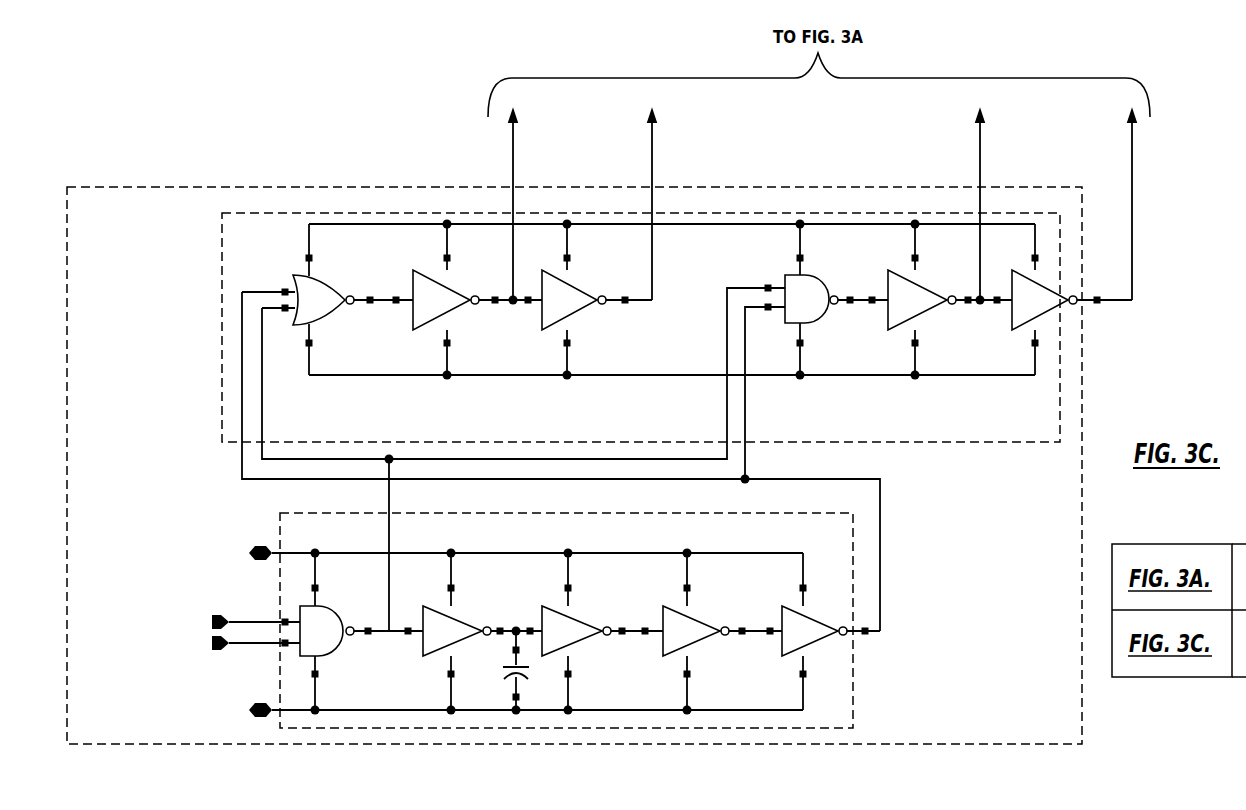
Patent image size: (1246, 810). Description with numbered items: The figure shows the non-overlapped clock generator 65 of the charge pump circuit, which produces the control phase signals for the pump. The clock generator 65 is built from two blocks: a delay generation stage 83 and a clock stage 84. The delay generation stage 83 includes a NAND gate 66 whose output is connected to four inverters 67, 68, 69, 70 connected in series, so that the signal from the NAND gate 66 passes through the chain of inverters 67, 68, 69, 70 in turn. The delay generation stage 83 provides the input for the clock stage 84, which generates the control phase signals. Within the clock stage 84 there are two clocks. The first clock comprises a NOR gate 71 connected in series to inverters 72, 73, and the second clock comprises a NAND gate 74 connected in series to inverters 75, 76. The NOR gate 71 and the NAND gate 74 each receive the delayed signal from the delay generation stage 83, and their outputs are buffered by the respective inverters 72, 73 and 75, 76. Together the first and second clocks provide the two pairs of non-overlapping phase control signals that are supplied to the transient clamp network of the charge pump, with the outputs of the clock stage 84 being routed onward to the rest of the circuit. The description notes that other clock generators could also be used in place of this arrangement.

The non-overlapped clock generator 65 is at (127, 187).
The clock stage 84 is at (222, 243).
The delay generation stage 83 is at (853, 595).
The NOR gate 71 is at (327, 320).
The inverter 72 is at (455, 306).
The inverter 73 is at (580, 308).
The NAND gate 74 is at (822, 322).
The inverter 75 is at (927, 312).
The inverter 76 is at (1045, 318).
The NAND gate 66 is at (323, 606).
The inverter 67 is at (457, 617).
The inverter 68 is at (585, 618).
The inverter 69 is at (702, 618).
The inverter 70 is at (807, 620).